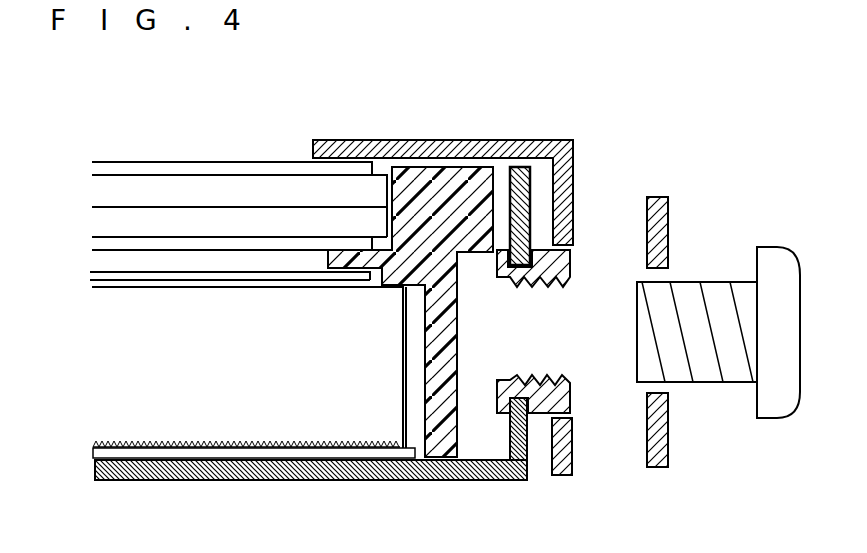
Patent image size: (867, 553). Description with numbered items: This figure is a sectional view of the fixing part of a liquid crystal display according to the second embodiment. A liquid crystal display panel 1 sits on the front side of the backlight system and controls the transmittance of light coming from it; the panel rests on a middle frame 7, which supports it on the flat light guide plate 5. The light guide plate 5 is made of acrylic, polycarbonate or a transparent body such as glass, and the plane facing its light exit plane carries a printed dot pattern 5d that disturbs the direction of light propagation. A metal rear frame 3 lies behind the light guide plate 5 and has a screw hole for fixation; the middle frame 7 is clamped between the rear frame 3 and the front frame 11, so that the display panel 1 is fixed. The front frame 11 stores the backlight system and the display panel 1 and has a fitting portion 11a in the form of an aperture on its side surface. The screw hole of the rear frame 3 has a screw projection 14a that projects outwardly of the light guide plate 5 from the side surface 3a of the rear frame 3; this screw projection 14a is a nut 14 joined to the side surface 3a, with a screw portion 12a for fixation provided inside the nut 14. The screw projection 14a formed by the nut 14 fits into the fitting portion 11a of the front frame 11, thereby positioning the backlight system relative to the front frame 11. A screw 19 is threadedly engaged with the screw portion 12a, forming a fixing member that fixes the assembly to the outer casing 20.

The liquid crystal display panel 1 is at (83, 155).
The rear frame 3 is at (95, 467).
The side surface 3a is at (528, 437).
The flat light guide plate 5 is at (112, 362).
The printed dot pattern 5d is at (127, 442).
The middle frame 7 is at (440, 167).
The front frame 11 is at (575, 198).
The fitting portion 11a is at (572, 430).
The screw portion 12a is at (552, 288).
The nut 14 is at (507, 275).
The screw projection 14a is at (570, 388).
The screw 19 is at (770, 246).
The outer casing 20 is at (668, 218).